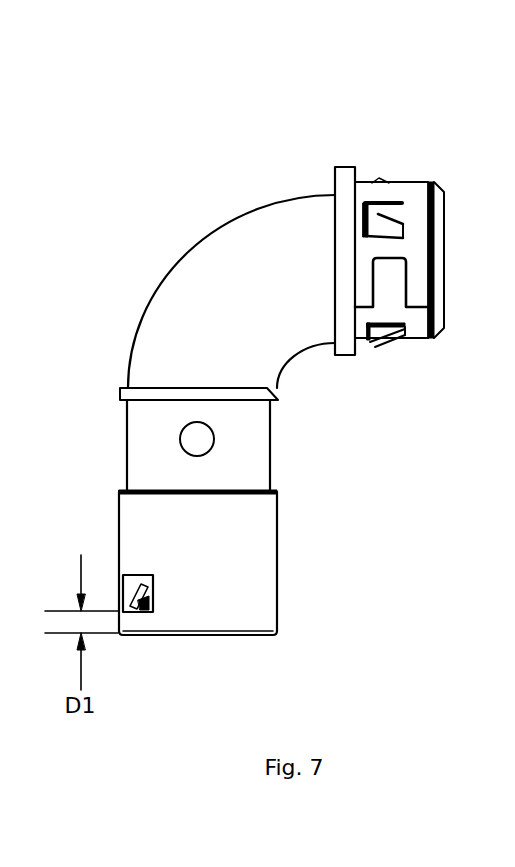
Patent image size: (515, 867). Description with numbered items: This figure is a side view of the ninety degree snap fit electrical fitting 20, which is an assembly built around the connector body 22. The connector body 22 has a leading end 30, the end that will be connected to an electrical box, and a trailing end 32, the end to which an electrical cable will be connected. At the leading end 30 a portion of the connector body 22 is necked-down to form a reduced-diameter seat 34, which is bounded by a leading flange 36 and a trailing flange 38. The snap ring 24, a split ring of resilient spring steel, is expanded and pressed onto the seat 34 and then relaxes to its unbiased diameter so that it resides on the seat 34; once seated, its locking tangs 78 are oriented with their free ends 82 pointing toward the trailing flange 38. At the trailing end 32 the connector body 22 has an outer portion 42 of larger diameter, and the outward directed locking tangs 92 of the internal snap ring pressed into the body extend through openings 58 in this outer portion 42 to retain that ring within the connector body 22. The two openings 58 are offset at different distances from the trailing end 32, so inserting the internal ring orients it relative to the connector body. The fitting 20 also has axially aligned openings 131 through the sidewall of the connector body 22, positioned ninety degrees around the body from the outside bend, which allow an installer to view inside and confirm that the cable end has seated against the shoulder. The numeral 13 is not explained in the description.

The ninety degree snap fit electrical fitting 20 is at (146, 195).
The trailing flange 38 is at (345, 167).
The snap ring 24 is at (407, 182).
The leading flange 36 is at (440, 190).
The leading end 30 is at (444, 262).
The reduced-diameter seat 34 is at (425, 344).
The locking tangs 78 is at (381, 217).
The free ends 82 is at (364, 348).
The conduit 13 is at (502, 462).
The connector body 22 is at (270, 452).
The axially aligned openings 131 is at (197, 440).
The outer portion 42 is at (277, 563).
The trailing end 32 is at (197, 636).
The openings 58 is at (137, 575).
The outward directed locking tangs 92 is at (135, 595).